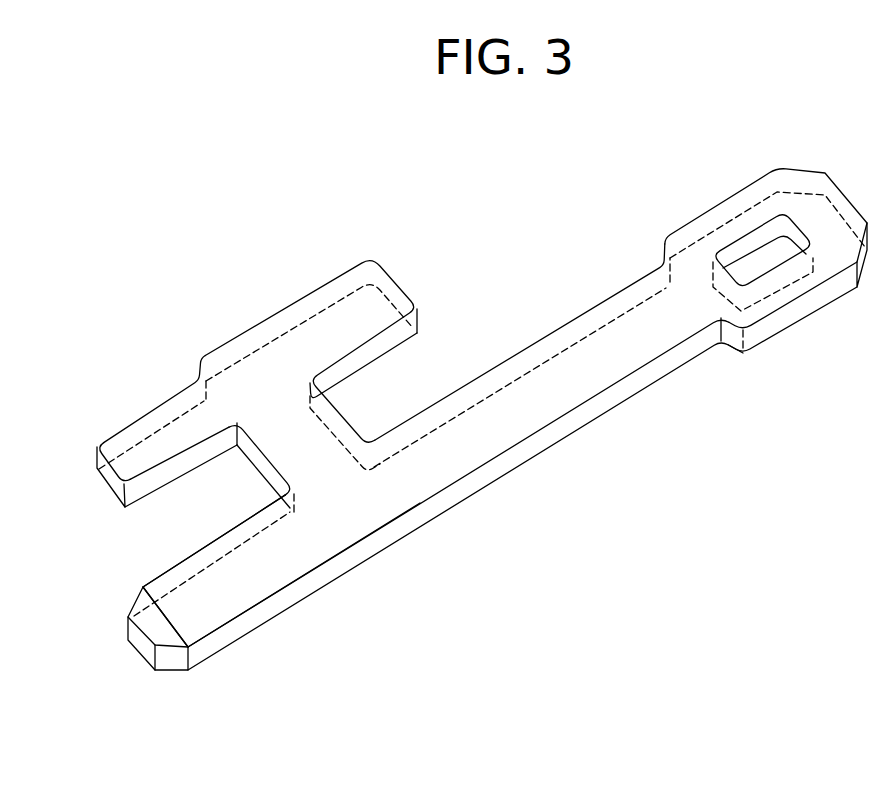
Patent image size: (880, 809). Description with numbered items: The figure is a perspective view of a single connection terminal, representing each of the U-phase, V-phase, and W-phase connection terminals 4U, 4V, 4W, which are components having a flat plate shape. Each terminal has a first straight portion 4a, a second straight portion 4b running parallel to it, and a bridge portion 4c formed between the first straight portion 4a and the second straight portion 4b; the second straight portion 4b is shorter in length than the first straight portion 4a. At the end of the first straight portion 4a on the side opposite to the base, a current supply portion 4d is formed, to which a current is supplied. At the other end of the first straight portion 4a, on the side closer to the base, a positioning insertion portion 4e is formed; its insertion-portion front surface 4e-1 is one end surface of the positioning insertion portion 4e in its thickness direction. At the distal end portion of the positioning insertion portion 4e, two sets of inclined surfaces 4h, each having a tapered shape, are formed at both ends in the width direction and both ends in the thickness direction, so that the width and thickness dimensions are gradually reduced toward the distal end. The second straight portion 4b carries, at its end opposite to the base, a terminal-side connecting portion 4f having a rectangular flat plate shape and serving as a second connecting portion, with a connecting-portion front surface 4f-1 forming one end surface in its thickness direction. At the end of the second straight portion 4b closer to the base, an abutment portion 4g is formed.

The U-phase connection terminal 4U is at (461, 415).
The V-phase connection terminal 4V is at (461, 415).
The W-phase connection terminal 4W is at (742, 162).
The first straight portion 4a is at (568, 447).
The second straight portion 4b is at (247, 328).
The bridge portion 4c is at (262, 458).
The current supply portion 4d is at (787, 316).
The positioning insertion portion 4e is at (138, 643).
The insertion-portion front surface 4e-1 is at (227, 577).
The terminal-side connecting portion 4f is at (403, 290).
The connecting-portion front surface 4f-1 is at (340, 305).
The abutment portion 4g is at (95, 477).
The inclined surfaces 4h is at (158, 632).